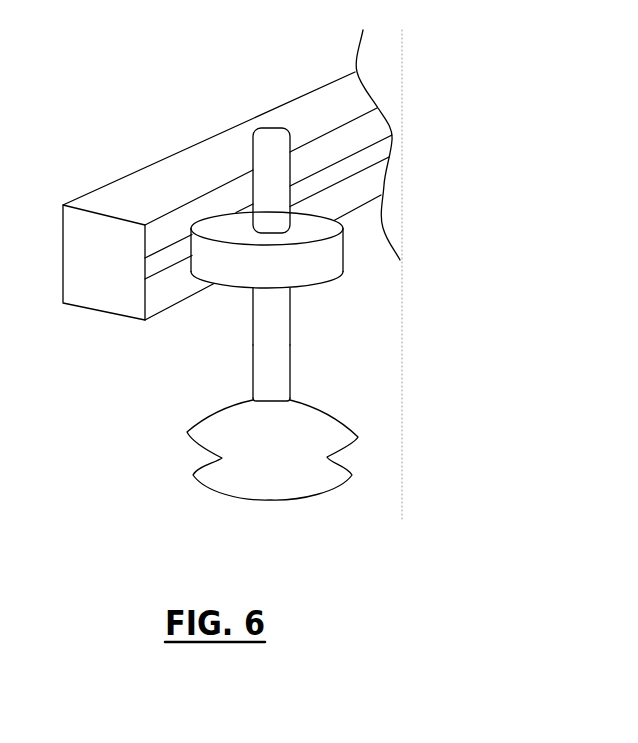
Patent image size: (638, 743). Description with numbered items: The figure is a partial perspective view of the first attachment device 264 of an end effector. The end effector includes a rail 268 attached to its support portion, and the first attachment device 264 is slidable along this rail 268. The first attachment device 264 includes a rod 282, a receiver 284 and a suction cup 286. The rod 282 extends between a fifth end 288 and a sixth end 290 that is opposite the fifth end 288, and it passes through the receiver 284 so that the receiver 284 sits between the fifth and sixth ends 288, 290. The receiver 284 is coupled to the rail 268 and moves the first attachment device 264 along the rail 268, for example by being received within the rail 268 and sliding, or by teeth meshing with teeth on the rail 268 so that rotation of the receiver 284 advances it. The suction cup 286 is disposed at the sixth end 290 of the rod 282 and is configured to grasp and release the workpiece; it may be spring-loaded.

The first attachment device 264 is at (309, 275).
The rail 268 is at (175, 177).
The fifth end 288 is at (275, 142).
The receiver 284 is at (318, 272).
The rod 282 is at (196, 344).
The sixth end 290 is at (278, 386).
The suction cup 286 is at (292, 477).